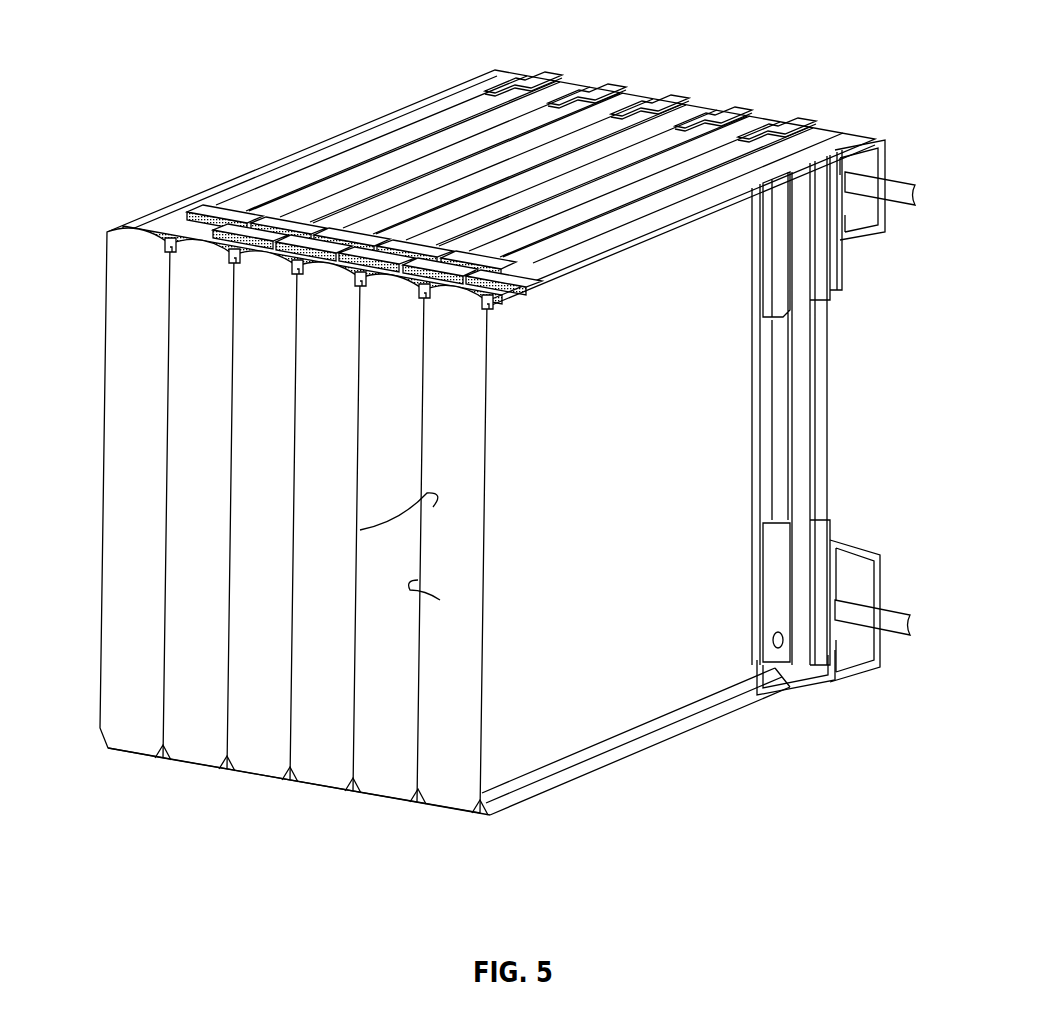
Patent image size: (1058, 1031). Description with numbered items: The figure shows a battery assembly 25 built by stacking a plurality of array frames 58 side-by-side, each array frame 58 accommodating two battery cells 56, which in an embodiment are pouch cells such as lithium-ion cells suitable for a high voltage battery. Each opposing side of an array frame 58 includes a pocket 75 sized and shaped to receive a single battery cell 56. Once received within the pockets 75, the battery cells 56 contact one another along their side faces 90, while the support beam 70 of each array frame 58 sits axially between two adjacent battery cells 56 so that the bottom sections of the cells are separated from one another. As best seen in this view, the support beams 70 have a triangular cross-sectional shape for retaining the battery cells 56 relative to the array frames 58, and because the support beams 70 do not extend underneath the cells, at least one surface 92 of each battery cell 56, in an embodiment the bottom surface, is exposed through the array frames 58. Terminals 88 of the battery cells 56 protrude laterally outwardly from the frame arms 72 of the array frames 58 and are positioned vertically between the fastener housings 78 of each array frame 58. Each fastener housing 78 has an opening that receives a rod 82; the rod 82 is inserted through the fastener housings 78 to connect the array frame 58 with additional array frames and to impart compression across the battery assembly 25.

The battery assembly 25 is at (262, 114).
The battery cell 56 is at (118, 683).
The array frame 58 is at (515, 78).
The support beam 70 is at (163, 757).
The frame arm 72 is at (797, 363).
The pocket 75 is at (810, 677).
The fastener housing 78 is at (860, 213).
The rod 82 is at (893, 180).
The terminal 88 is at (827, 373).
The side face 90 is at (360, 530).
The surface 92 is at (118, 755).